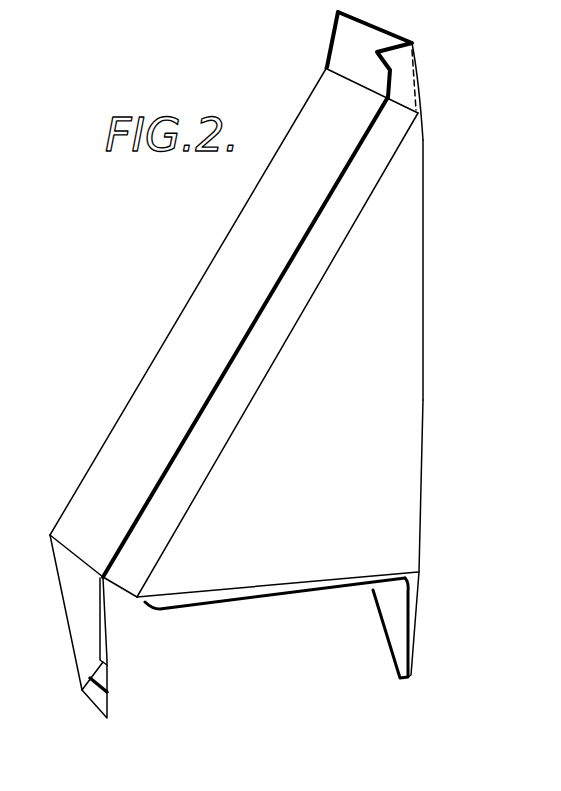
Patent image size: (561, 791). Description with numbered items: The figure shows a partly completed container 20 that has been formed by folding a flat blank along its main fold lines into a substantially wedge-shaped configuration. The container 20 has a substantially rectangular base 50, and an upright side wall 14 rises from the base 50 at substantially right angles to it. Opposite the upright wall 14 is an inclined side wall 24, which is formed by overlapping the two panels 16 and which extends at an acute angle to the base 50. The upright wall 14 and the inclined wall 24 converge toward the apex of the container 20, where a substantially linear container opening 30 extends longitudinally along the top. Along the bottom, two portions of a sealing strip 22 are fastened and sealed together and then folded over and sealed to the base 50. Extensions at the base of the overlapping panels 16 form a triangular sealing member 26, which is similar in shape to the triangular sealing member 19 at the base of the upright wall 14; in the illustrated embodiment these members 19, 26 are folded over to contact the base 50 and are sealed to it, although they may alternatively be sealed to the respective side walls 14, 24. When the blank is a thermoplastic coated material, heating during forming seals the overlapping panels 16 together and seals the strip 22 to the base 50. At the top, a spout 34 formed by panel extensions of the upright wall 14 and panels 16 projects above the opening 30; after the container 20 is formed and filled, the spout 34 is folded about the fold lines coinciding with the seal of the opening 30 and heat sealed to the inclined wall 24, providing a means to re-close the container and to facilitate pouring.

The upright side wall 14 is at (423, 335).
The overlapping panels 16 is at (243, 288).
The triangular sealing member 19 is at (395, 668).
The container 20 is at (422, 497).
The sealing strip 22 is at (218, 600).
The inclined side wall 24 is at (120, 422).
The triangular sealing member 26 is at (68, 662).
The container opening 30 is at (400, 107).
The spout 34 is at (330, 43).
The base 50 is at (313, 585).